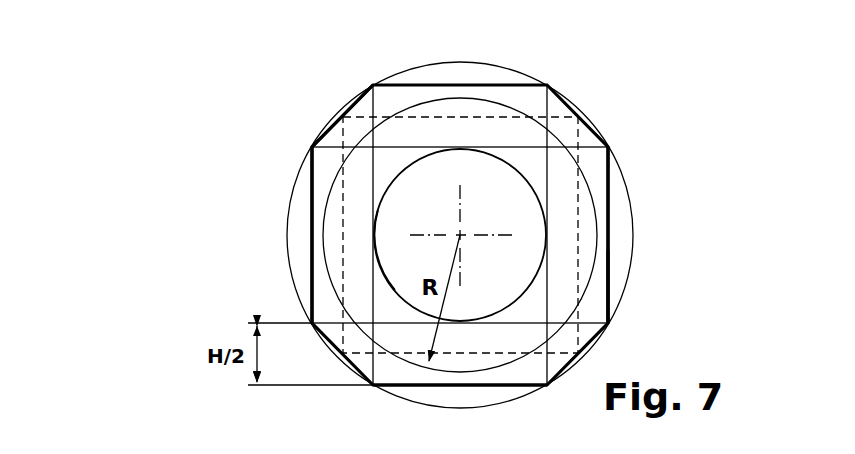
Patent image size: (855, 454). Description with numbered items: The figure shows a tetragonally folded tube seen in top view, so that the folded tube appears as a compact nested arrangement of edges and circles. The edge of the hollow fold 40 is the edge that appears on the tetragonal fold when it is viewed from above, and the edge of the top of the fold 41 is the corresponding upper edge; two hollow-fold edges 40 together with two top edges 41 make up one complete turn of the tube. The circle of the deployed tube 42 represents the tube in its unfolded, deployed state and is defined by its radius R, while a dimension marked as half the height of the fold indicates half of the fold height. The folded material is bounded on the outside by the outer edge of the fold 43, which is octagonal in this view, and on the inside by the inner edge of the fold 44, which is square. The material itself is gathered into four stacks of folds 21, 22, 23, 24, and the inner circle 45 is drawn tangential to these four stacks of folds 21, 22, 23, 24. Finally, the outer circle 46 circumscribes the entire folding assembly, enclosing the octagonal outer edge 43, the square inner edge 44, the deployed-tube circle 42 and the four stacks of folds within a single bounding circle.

The stack of folds 21 is at (563, 240).
The stack of folds 22 is at (510, 340).
The stack of folds 23 is at (357, 297).
The stack of folds 24 is at (398, 98).
The edge of the hollow fold 40 is at (532, 117).
The edge of the top of the fold 41 is at (312, 202).
The circle of the deployed tube 42 is at (590, 291).
The outer edge of the fold 43 is at (331, 121).
The inner edge of the fold 44 is at (368, 272).
The inner circle 45 is at (530, 173).
The outer circle 46 is at (584, 107).